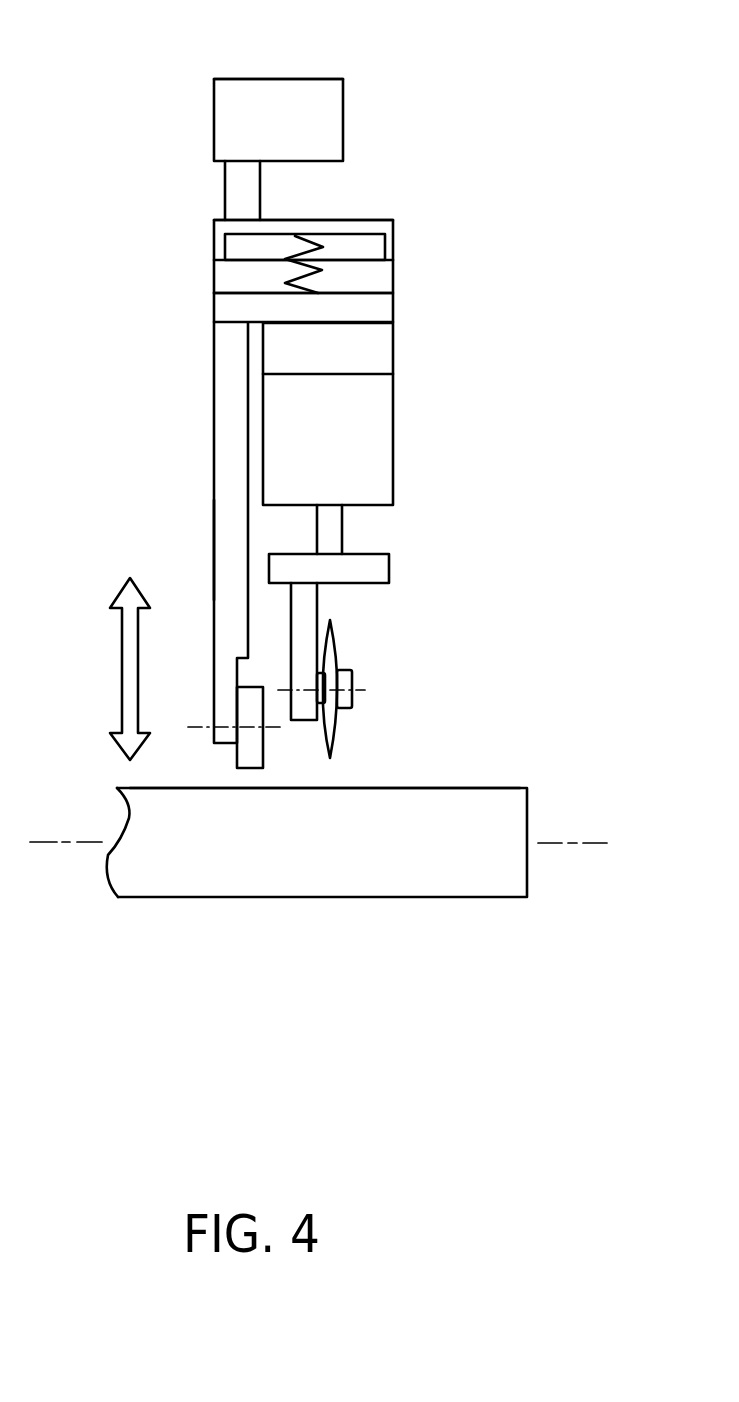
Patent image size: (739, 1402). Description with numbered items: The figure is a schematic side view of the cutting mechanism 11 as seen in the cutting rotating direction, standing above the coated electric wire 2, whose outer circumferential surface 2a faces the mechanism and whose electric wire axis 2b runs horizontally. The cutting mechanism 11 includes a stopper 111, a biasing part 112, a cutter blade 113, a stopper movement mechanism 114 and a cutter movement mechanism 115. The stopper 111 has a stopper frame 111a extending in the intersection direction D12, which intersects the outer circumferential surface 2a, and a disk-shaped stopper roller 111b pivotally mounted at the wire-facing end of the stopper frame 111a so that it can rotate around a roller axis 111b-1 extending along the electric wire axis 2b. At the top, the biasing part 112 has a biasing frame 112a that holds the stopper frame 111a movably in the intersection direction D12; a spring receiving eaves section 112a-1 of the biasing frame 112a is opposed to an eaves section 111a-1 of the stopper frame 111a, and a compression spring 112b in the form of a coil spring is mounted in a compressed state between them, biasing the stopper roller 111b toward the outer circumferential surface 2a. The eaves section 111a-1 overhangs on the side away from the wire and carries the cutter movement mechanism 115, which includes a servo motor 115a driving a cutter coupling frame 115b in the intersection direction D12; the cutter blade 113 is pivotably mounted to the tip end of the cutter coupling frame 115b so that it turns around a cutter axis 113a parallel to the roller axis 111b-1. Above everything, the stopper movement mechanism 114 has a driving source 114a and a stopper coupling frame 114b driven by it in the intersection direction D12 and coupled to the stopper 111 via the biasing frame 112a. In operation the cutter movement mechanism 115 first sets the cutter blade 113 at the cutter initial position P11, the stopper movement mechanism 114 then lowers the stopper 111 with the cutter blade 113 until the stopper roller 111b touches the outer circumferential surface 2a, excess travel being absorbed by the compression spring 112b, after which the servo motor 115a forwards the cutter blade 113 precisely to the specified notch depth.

The coated electric wire 2 is at (513, 786).
The outer circumferential surface 2a is at (408, 853).
The electric wire axis 2b is at (596, 843).
The cutting mechanism 11 is at (156, 120).
The stopper 111 is at (212, 546).
The stopper frame 111a is at (212, 388).
The eaves section 111a-1 is at (382, 307).
The stopper roller 111b is at (248, 768).
The roller axis 111b-1 is at (197, 727).
The biasing part 112 is at (400, 240).
The biasing frame 112a is at (212, 262).
The spring receiving eaves section 112a-1 is at (343, 220).
The compression spring 112b is at (323, 277).
The cutter blade 113 is at (337, 637).
The cutter axis 113a is at (360, 695).
The stopper movement mechanism 114 is at (349, 110).
The driving source 114a is at (281, 79).
The stopper coupling frame 114b is at (225, 187).
The cutter movement mechanism 115 is at (401, 483).
The servo motor 115a is at (380, 425).
The cutter coupling frame 115b is at (320, 605).
The cutter initial position P11 is at (361, 682).
The intersection direction D12 is at (122, 672).